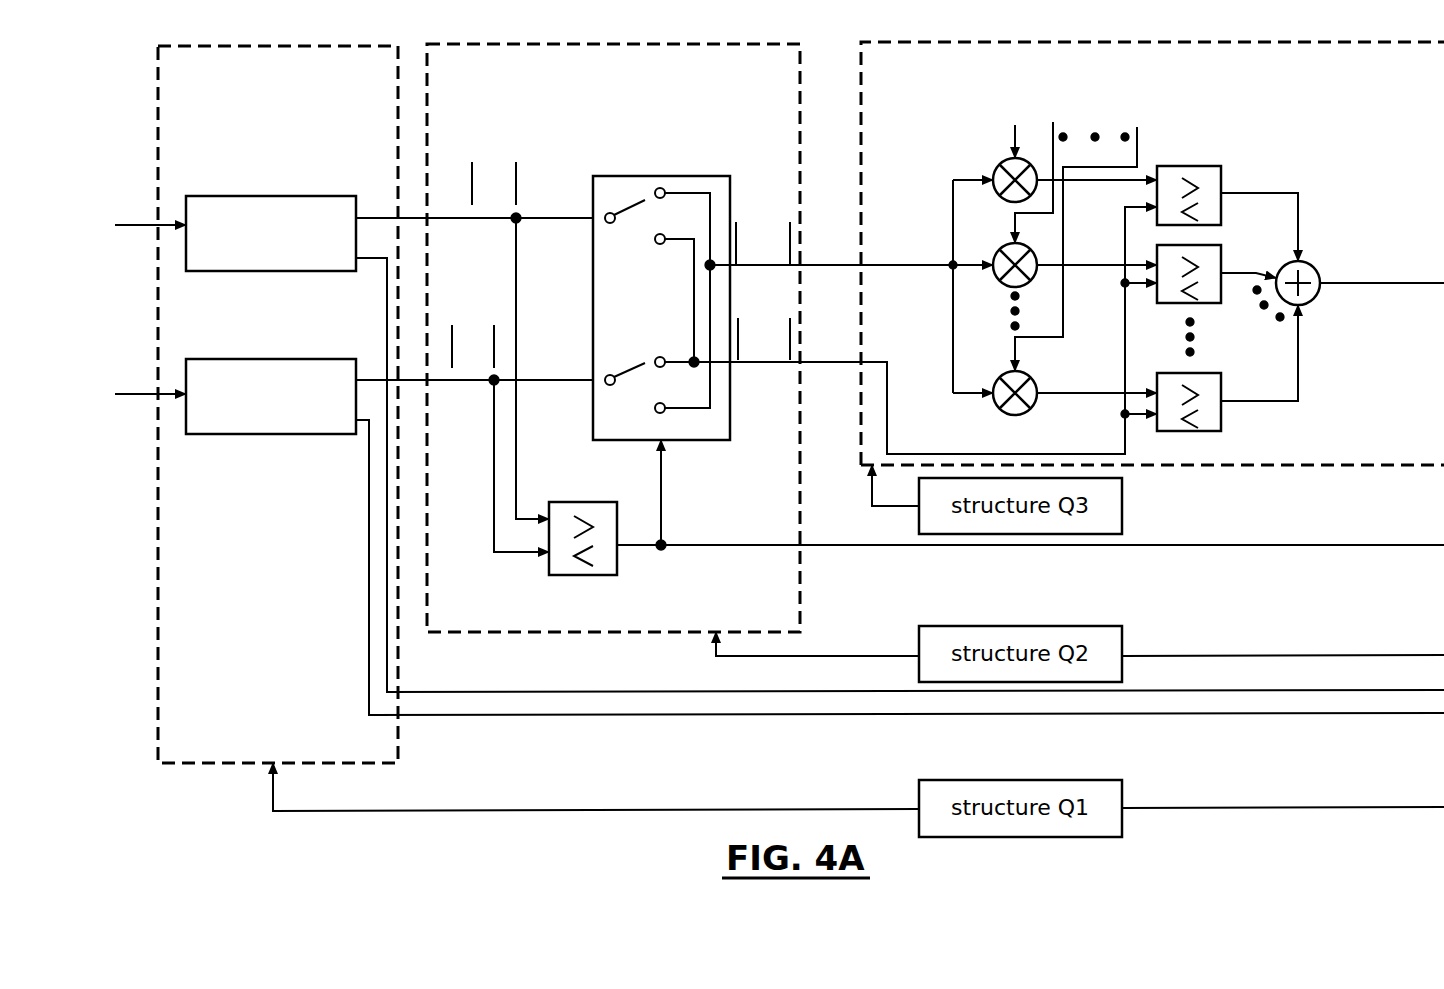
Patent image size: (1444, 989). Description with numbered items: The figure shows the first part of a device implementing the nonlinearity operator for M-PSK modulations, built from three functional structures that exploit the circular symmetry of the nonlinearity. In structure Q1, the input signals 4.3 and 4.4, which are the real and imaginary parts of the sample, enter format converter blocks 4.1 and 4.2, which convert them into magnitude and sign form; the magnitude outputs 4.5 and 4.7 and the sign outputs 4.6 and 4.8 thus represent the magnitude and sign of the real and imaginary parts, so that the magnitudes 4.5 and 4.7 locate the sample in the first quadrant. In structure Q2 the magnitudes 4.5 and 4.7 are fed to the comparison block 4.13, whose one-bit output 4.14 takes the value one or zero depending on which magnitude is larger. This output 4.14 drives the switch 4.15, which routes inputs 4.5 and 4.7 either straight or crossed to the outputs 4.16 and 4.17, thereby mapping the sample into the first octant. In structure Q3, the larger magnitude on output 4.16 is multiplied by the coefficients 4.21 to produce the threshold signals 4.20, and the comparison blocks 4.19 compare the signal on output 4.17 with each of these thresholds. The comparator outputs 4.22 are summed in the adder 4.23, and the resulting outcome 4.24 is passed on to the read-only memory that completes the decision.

The format converter block 4.1 is at (258, 196).
The format converter block 4.2 is at (230, 434).
The input signal 4.3 is at (175, 225).
The input signal 4.4 is at (175, 396).
The magnitude output 4.5 is at (366, 218).
The sign output 4.6 is at (466, 692).
The magnitude output 4.7 is at (440, 381).
The sign output 4.8 is at (369, 688).
The comparison block 4.13 is at (568, 575).
The comparison output 4.14 is at (661, 545).
The switch 4.15 is at (646, 176).
The switch output 4.16 is at (874, 265).
The switch output 4.17 is at (816, 362).
The comparison blocks 4.19 is at (1204, 166).
The threshold signals 4.20 is at (1108, 180).
The coefficients 4.21 is at (1013, 124).
The comparator outputs 4.22 is at (1236, 194).
The adder 4.23 is at (1312, 266).
The adder outcome 4.24 is at (1364, 284).